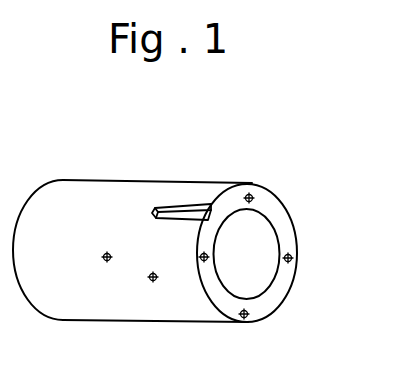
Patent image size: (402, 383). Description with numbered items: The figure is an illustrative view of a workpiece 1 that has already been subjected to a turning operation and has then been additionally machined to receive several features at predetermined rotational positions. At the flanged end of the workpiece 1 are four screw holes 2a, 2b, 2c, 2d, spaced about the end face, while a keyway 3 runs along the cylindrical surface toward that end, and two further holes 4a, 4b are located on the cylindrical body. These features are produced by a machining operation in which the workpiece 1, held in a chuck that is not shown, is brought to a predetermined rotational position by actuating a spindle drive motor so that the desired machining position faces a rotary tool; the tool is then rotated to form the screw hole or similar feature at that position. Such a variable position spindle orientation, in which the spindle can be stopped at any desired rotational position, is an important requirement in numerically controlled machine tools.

The workpiece 1 is at (206, 184).
The screw hole 2a is at (253, 195).
The screw hole 2b is at (203, 262).
The screw hole 2c is at (246, 320).
The screw hole 2d is at (291, 256).
The keyway 3 is at (176, 206).
The hole 4a is at (151, 282).
The hole 4b is at (105, 262).